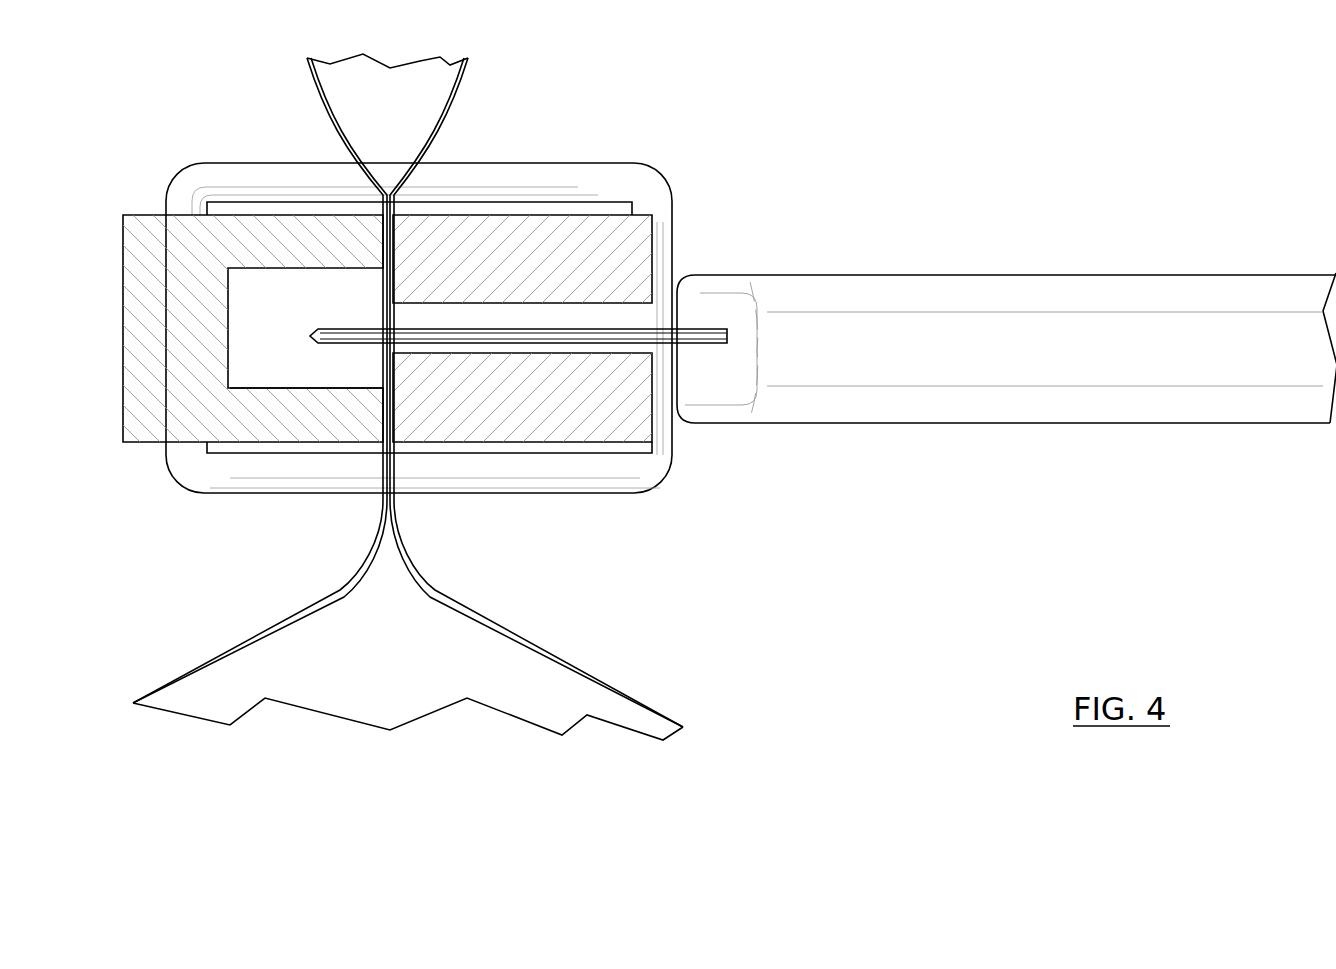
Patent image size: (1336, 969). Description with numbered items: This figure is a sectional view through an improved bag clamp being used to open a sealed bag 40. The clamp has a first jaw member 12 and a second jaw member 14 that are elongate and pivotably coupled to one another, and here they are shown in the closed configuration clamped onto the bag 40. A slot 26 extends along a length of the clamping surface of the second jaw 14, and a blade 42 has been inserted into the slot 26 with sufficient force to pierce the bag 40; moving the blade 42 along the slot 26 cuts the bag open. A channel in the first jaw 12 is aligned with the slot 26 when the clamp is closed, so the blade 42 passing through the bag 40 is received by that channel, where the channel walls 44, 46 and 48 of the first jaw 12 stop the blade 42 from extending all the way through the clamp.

The first jaw member 12 is at (258, 213).
The second jaw member 14 is at (560, 213).
The slot 26 is at (626, 318).
The sealed bag 40 is at (180, 672).
The blade 42 is at (580, 345).
The channel wall 44 is at (290, 268).
The channel wall 46 is at (220, 362).
The channel wall 48 is at (327, 383).